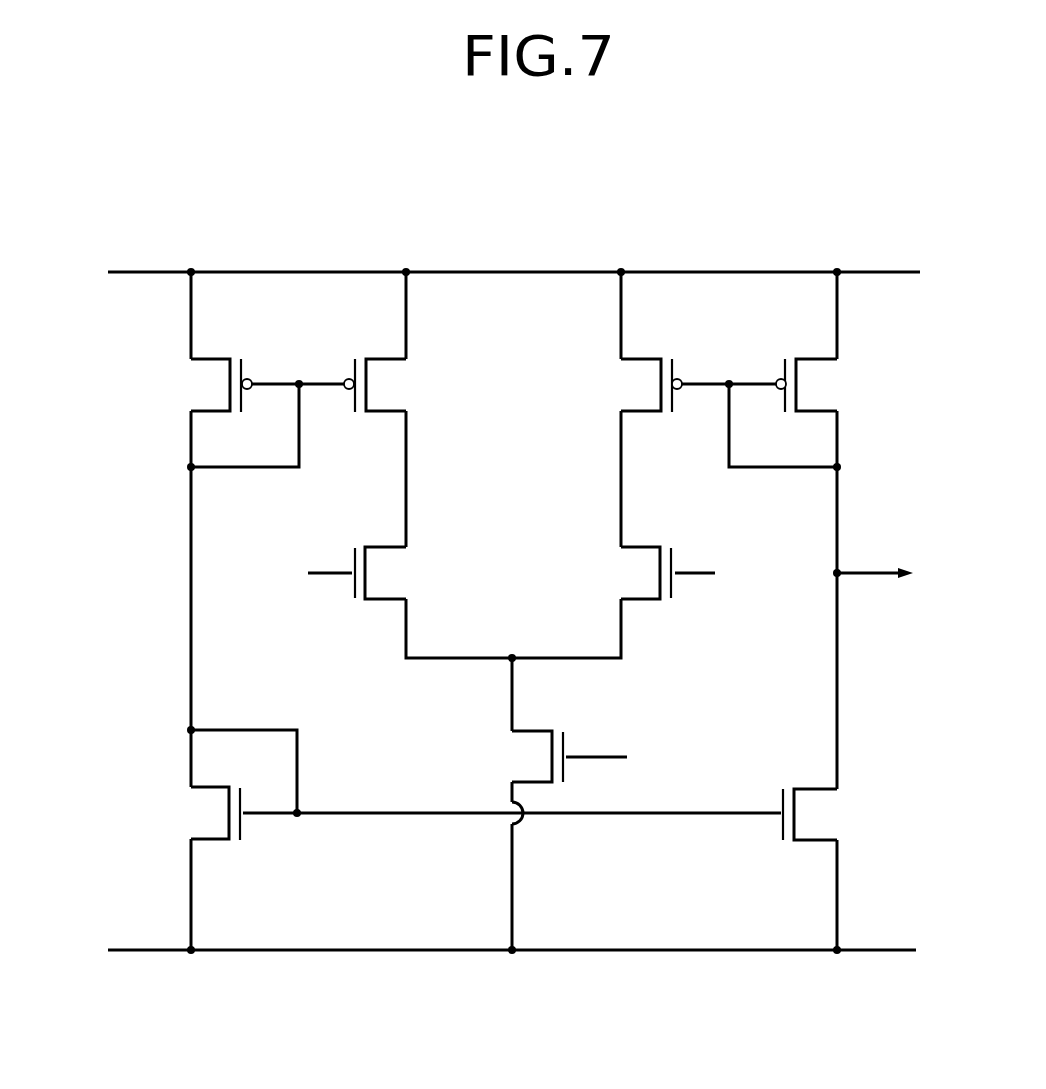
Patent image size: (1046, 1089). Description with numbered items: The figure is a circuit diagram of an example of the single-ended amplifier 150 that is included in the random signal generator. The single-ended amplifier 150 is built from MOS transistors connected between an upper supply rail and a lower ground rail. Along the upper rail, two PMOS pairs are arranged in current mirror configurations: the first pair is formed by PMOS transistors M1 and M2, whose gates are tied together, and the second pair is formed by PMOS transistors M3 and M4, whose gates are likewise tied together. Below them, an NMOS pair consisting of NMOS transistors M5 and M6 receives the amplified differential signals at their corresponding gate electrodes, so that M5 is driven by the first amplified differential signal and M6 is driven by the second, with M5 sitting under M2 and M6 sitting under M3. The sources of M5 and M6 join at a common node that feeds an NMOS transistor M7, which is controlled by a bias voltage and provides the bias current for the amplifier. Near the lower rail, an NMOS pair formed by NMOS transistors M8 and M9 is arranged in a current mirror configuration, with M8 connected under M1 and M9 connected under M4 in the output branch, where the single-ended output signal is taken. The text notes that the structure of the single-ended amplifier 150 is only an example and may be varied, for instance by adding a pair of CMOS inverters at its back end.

The single-ended amplifier 150 is at (530, 180).
The PMOS transistor M1 is at (205, 385).
The PMOS transistor M2 is at (391, 385).
The PMOS transistor M3 is at (635, 385).
The PMOS transistor M4 is at (824, 385).
The NMOS transistor M5 is at (373, 573).
The NMOS transistor M6 is at (651, 573).
The NMOS transistor M7 is at (551, 756).
The NMOS transistor M8 is at (196, 813).
The NMOS transistor M9 is at (827, 814).